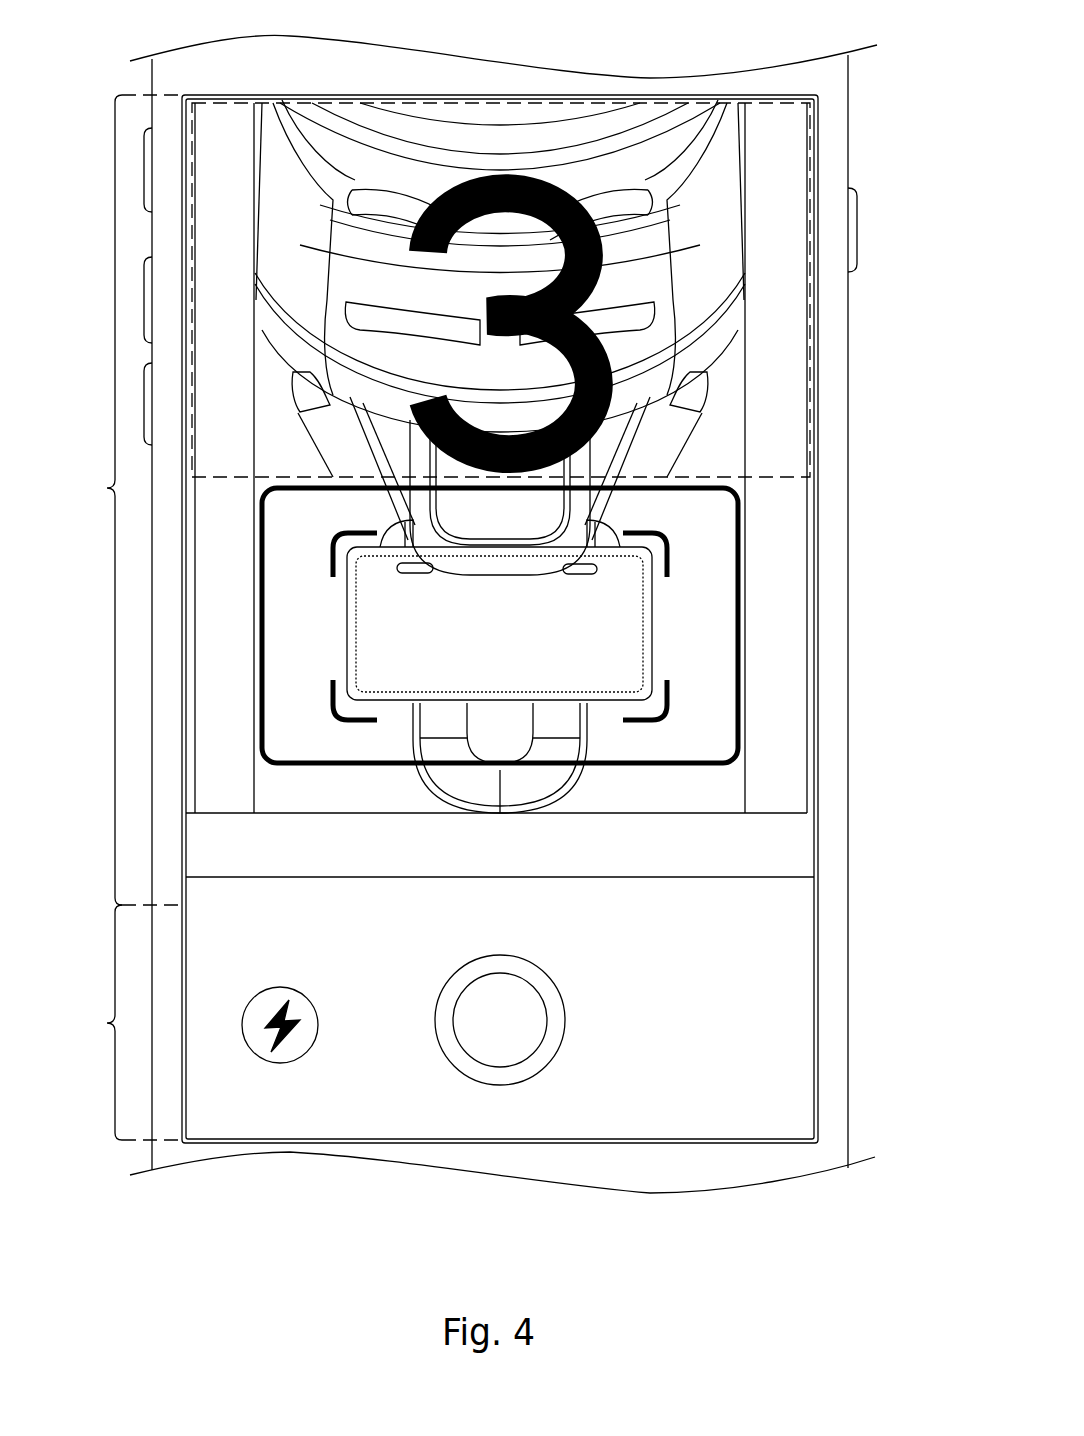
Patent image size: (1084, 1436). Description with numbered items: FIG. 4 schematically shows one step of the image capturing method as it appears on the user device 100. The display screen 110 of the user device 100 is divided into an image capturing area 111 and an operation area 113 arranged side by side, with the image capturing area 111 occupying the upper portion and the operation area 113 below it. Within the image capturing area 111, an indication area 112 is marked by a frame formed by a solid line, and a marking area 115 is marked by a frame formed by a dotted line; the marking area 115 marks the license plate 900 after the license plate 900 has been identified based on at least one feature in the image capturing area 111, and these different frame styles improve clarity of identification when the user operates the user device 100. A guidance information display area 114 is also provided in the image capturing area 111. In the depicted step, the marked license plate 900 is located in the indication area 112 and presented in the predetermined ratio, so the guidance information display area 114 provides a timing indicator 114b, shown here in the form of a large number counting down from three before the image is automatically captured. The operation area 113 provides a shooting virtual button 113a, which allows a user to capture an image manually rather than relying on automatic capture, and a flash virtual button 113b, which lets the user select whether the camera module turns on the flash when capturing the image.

The user device 100 is at (840, 133).
The display screen 110 is at (777, 93).
The image capturing area 111 is at (119, 500).
The indication area 112 is at (740, 575).
The operation area 113 is at (119, 1022).
The shooting virtual button 113a is at (497, 1085).
The flash virtual button 113b is at (280, 1063).
The guidance information display area 114 is at (811, 315).
The timing indicator 114b is at (635, 402).
The marking area 115 is at (670, 712).
The license plate 900 is at (652, 625).